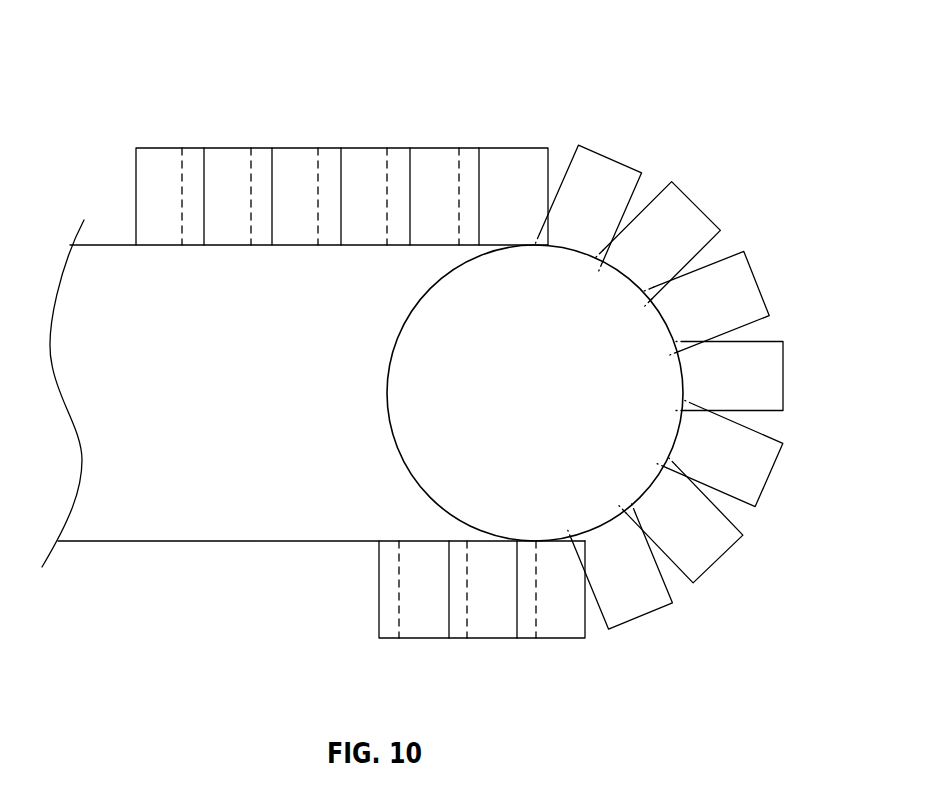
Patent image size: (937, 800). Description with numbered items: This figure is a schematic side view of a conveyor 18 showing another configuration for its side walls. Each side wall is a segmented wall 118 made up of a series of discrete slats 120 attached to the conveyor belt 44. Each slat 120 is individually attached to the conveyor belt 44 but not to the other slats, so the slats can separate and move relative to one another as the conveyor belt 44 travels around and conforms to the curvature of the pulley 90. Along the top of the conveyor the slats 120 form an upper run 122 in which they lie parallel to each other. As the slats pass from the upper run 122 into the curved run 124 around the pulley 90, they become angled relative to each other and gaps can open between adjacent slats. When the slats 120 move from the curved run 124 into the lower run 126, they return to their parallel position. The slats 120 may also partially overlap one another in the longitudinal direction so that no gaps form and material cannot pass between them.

The rotor assembly 18 is at (262, 55).
The conveyor belt 44 is at (148, 543).
The pulley 90 is at (418, 488).
The segmented wall 118 is at (540, 110).
The slat 120 is at (161, 172).
The upper run 122 is at (371, 168).
The curved run 124 is at (783, 380).
The lower run 126 is at (495, 641).